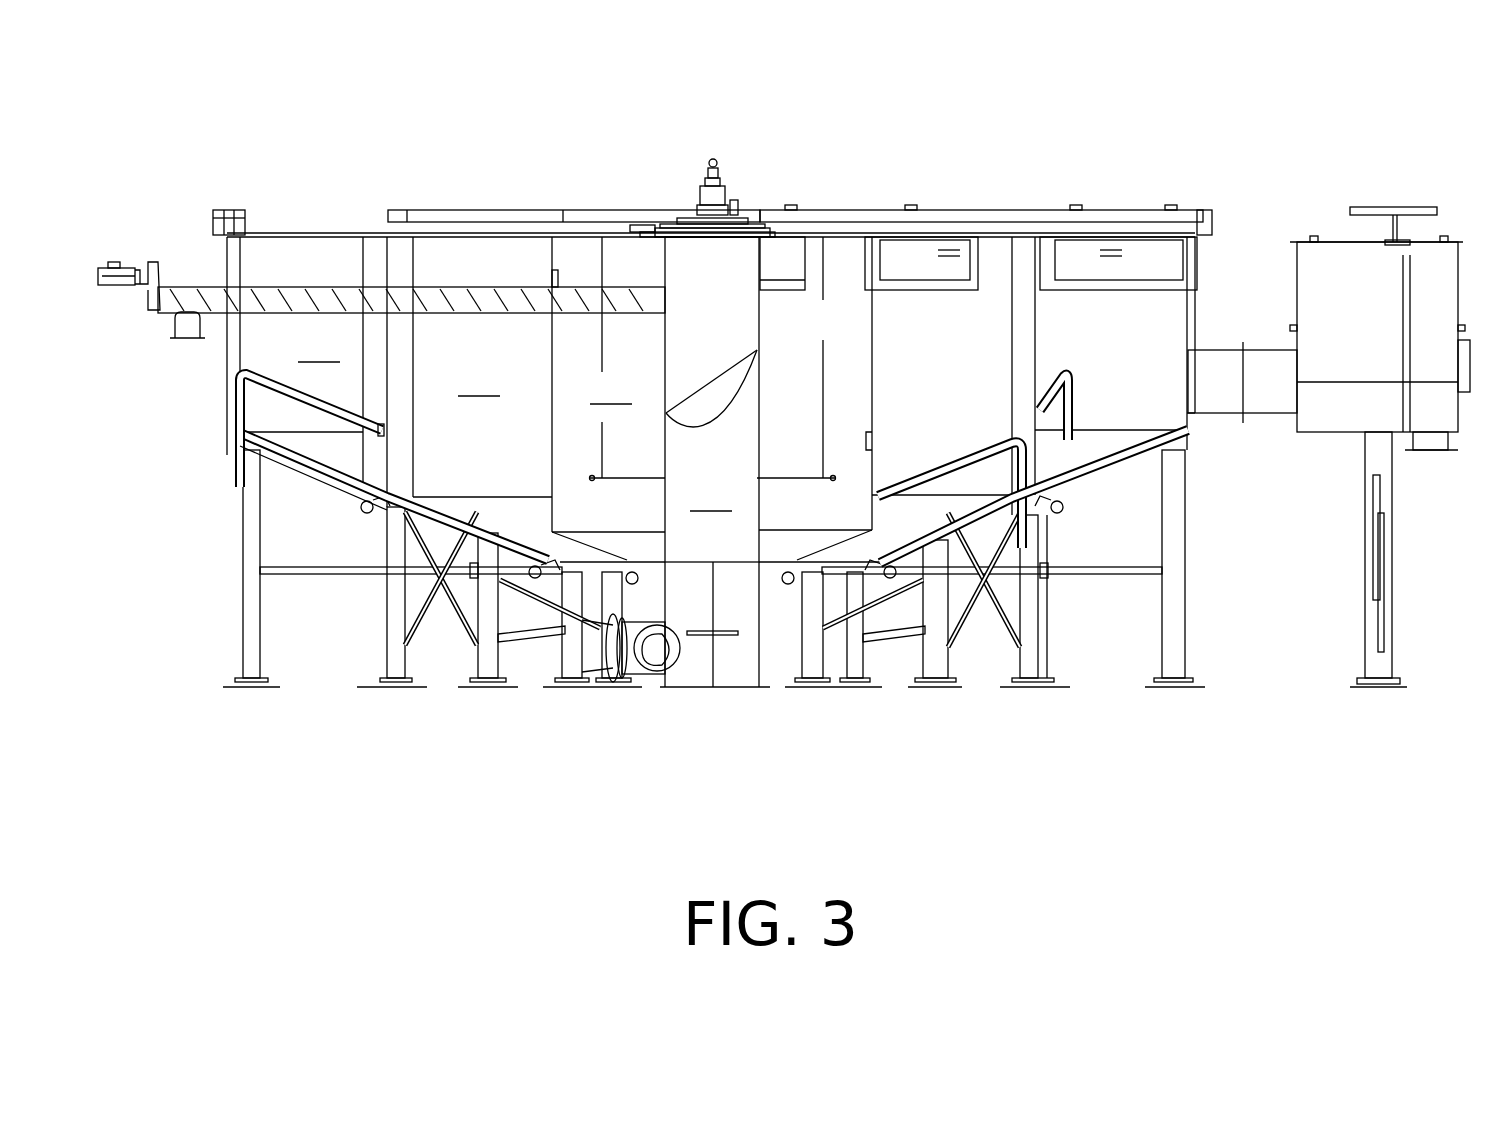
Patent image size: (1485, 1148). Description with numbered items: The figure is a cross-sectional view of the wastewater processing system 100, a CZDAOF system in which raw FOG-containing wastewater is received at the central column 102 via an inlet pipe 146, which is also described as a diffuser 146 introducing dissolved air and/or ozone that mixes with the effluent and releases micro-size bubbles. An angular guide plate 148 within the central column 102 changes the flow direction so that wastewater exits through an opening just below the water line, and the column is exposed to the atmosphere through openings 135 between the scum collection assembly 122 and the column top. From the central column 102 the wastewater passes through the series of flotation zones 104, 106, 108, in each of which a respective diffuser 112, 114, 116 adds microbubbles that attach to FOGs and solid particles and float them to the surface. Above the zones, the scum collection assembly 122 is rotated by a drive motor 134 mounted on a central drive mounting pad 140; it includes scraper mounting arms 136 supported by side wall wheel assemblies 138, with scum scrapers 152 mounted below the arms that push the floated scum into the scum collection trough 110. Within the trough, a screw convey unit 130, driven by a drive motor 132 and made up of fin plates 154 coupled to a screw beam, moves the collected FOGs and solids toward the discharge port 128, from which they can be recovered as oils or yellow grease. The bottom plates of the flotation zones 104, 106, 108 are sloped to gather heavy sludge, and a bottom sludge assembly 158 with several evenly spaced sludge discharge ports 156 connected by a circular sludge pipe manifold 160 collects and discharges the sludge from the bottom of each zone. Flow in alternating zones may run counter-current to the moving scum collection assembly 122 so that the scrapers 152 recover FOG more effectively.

The system for processing wastewater 100 is at (1203, 95).
The central column 102 is at (712, 457).
The flotation zone 104 is at (608, 399).
The flotation zone 106 is at (482, 384).
The flotation zone 108 is at (326, 372).
The scum collection trough 110 is at (435, 282).
The diffuser 112 is at (782, 465).
The diffuser 114 is at (960, 440).
The diffuser 116 is at (1088, 396).
The scum collection assembly 122 is at (474, 198).
The discharge port 128 is at (186, 342).
The screw convey unit 130 is at (322, 290).
The drive motor 132 is at (128, 252).
The drive motor 134 is at (731, 160).
The openings 135 is at (637, 222).
The scraper mounting arm 136 is at (965, 198).
The side wall wheel assembly 138 is at (1196, 198).
The central drive mounting pad 140 is at (686, 247).
The inlet pipe 146 is at (645, 688).
The angular guide plate 148 is at (738, 410).
The scum scraper 152 is at (490, 312).
The fin plate 154 is at (203, 296).
The sludge discharge port 156 is at (357, 514).
The bottom sludge assembly 158 is at (266, 462).
The circular sludge pipe manifold 160 is at (310, 484).